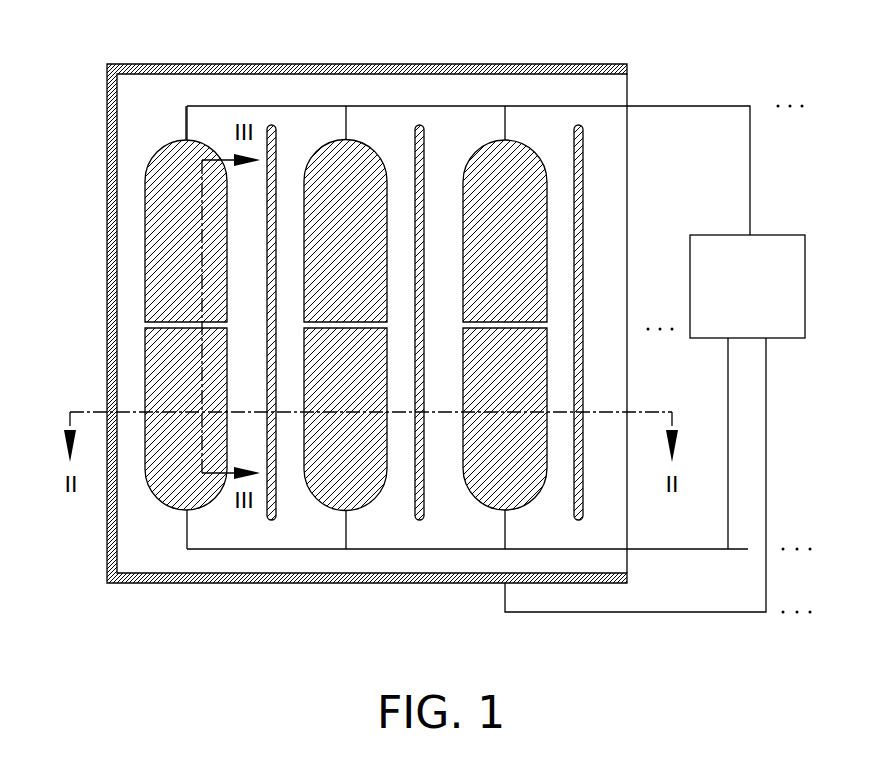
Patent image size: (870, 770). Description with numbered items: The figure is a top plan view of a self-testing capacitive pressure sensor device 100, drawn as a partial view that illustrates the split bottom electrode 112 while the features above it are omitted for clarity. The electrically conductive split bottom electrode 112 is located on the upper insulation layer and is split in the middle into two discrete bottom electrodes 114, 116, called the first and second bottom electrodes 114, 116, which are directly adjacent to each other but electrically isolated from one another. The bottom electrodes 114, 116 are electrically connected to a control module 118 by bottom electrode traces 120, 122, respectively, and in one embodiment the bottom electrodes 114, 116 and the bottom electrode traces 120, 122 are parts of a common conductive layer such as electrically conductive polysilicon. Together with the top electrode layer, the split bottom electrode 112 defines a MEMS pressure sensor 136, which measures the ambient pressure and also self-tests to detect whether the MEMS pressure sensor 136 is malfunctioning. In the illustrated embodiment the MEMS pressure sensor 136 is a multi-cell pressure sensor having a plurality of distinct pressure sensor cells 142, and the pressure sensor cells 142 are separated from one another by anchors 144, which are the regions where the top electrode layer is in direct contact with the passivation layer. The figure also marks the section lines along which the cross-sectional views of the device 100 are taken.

The self-testing capacitive pressure sensor device 100 is at (588, 42).
The split bottom electrode 112 is at (58, 205).
The first bottom electrode 114 is at (463, 186).
The second bottom electrode 116 is at (463, 338).
The control module 118 is at (735, 318).
The bottom electrode trace 120 is at (430, 104).
The bottom electrode trace 122 is at (445, 552).
The MEMS pressure sensor 136 is at (210, 603).
The pressure sensor cells 142 is at (235, 128).
The anchors 144 is at (278, 132).